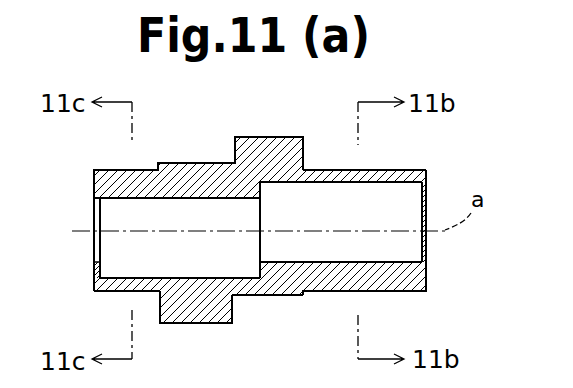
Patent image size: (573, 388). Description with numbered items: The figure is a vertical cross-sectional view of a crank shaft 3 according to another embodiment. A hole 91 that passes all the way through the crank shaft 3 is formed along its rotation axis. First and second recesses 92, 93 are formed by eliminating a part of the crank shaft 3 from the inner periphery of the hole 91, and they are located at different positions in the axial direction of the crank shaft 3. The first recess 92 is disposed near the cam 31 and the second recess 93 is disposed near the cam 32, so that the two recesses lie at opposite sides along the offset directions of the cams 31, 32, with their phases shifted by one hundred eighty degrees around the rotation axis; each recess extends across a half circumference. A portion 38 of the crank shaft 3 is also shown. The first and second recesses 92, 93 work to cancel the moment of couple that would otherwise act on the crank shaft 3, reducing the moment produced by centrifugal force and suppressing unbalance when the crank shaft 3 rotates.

The crank shaft 3 is at (321, 296).
The cam 31 is at (264, 296).
The cam 32 is at (194, 324).
The cylindrical portion 38 is at (411, 292).
The hole 91 is at (412, 262).
The first recess 92 is at (392, 188).
The second recess 93 is at (118, 273).